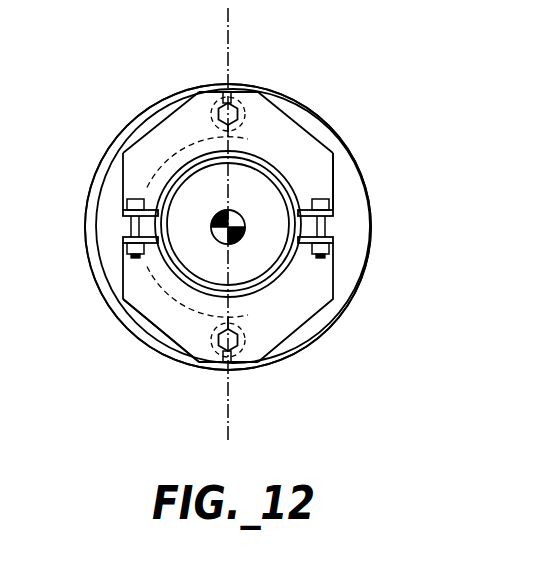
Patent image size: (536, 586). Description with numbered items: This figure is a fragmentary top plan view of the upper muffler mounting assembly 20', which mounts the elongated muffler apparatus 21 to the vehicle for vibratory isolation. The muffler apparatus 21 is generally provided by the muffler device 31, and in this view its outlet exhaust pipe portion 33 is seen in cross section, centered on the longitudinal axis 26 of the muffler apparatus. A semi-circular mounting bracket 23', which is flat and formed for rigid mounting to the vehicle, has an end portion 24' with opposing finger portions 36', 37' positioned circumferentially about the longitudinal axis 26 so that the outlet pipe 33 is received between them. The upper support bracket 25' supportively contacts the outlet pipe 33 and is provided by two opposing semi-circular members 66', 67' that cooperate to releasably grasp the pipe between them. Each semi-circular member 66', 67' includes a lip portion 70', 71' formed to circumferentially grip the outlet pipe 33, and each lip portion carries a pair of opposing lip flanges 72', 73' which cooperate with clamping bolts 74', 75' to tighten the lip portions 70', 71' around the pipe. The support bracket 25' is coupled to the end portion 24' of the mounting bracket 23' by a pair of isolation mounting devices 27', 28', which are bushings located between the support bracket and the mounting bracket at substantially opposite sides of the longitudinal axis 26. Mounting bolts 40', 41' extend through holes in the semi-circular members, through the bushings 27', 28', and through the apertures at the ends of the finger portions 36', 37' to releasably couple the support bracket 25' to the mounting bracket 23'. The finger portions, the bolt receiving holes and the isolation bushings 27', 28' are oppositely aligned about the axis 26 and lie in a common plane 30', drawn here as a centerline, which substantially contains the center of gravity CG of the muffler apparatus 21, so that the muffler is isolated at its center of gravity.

The upper muffler mounting assembly 20' is at (242, 201).
The muffler apparatus 21 is at (108, 140).
The mounting bracket 23' is at (181, 302).
The end portion 24' is at (135, 332).
The support bracket 25' is at (380, 181).
The longitudinal axis 26 is at (180, 155).
The isolation mounting device 27' is at (284, 98).
The isolation mounting device 28' is at (283, 358).
The plane 30' is at (271, 222).
The muffler device 31 is at (331, 329).
The outlet exhaust pipe portion 33 is at (290, 186).
The finger portion 36' is at (262, 138).
The finger portion 37' is at (273, 302).
The mounting bolt 40' is at (204, 86).
The mounting bolt 41' is at (202, 362).
The semi-circular member 66' is at (333, 135).
The semi-circular member 67' is at (128, 330).
The lip portion 70' is at (157, 142).
The lip portion 71' is at (182, 361).
The lip flange 72' is at (231, 213).
The lip flange 73' is at (232, 260).
The clamping bolt 74' is at (83, 223).
The clamping bolt 75' is at (378, 233).
The center of gravity CG is at (238, 237).